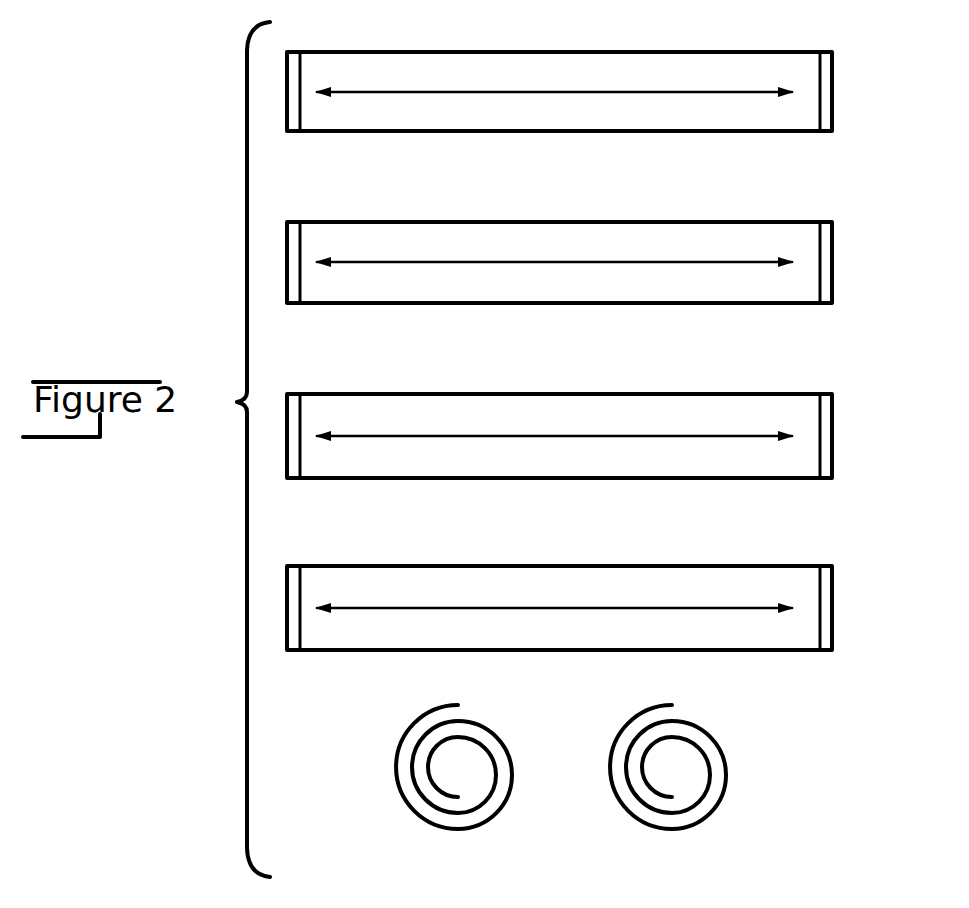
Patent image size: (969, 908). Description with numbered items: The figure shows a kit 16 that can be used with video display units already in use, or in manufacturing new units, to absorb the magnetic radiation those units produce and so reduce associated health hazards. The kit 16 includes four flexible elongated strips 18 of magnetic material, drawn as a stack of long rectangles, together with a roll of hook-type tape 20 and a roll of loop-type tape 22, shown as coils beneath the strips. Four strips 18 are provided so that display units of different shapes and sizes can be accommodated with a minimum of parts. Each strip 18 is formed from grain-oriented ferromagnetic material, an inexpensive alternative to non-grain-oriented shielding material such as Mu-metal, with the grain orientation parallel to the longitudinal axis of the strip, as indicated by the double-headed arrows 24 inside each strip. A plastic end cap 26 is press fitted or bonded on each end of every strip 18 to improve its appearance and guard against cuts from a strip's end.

The kit 16 is at (597, 29).
The flexible elongated strip of magnetic material 18 is at (680, 131).
The hook-type tape 20 is at (722, 745).
The loop-type tape 22 is at (508, 745).
The double-headed arrow 24 is at (615, 92).
The plastic end cap 26 is at (292, 131).